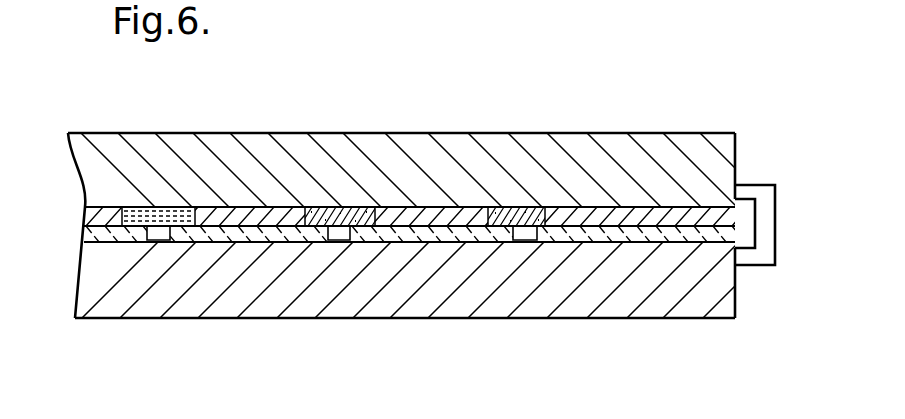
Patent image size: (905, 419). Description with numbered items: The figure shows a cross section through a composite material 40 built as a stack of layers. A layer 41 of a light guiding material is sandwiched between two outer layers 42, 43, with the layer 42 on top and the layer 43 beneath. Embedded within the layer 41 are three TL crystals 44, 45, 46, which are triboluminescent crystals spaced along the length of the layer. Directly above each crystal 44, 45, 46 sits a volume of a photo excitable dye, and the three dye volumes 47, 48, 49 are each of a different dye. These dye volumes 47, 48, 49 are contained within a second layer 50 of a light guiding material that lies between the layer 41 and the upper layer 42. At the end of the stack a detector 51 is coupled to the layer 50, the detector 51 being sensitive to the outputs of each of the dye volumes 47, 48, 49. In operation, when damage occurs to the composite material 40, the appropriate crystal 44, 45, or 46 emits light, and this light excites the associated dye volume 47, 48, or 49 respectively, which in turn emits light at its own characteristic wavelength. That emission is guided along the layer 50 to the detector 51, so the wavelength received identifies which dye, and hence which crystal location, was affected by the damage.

The composite material 40 is at (226, 84).
The layer of light guiding material 41 is at (468, 237).
The layer 42 is at (303, 152).
The layer 43 is at (255, 283).
The TL crystal 44 is at (160, 243).
The TL crystal 45 is at (343, 243).
The TL crystal 46 is at (523, 243).
The photo excitable dye 47 is at (163, 207).
The photo excitable dye 48 is at (355, 206).
The photo excitable dye 49 is at (547, 207).
The second layer of light guiding material 50 is at (675, 212).
The detector 51 is at (768, 190).